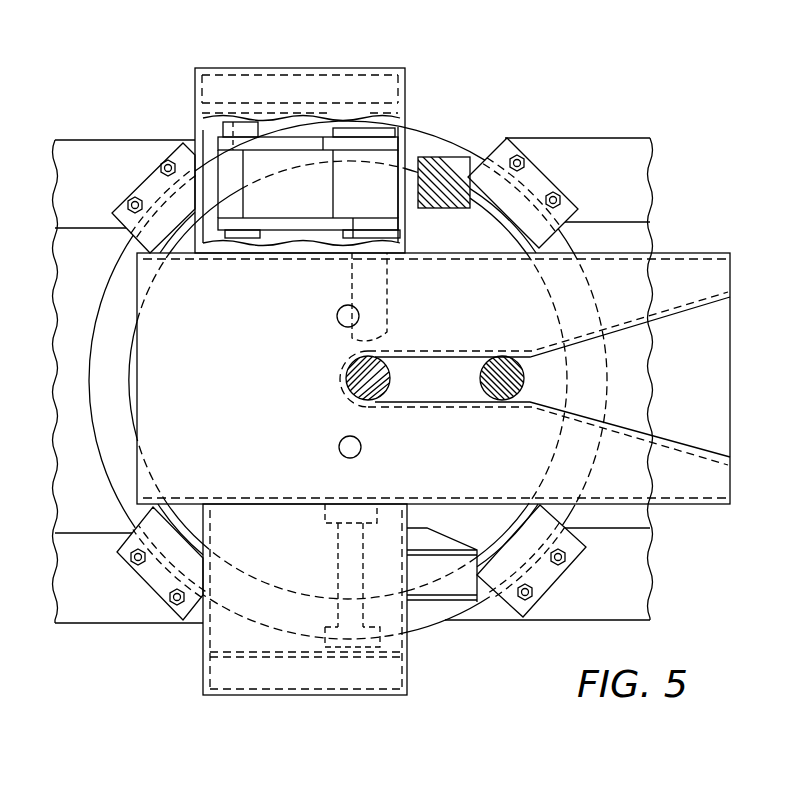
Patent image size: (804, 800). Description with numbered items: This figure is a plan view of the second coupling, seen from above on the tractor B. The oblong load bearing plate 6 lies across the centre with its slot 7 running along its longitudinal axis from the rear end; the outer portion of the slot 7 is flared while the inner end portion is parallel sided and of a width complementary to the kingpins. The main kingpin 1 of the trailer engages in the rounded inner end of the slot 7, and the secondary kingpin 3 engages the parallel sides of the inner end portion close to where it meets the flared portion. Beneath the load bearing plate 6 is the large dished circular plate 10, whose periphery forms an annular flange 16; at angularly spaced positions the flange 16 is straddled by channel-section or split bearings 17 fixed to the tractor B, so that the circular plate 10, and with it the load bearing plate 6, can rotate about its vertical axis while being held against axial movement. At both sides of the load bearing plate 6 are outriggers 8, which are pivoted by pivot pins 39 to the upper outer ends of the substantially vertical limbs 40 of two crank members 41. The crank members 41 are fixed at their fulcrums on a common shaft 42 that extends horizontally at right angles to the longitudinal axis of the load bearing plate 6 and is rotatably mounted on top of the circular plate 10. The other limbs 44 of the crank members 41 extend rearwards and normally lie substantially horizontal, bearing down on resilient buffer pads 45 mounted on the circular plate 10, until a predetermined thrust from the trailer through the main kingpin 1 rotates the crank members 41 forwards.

The main kingpin 1 is at (347, 376).
The secondary kingpin 3 is at (503, 395).
The load bearing plate 6 is at (680, 270).
The slot 7 is at (693, 313).
The outriggers 8 is at (212, 92).
The circular plate 10 is at (473, 520).
The annular flange 16 is at (414, 132).
The bearings 17 is at (157, 178).
The pivot pins 39 is at (345, 562).
The limbs 40 is at (325, 148).
The crank members 41 is at (344, 136).
The shaft 42 is at (372, 287).
The limbs 44 is at (448, 587).
The buffer pads 45 is at (450, 157).
The tractor B is at (640, 563).